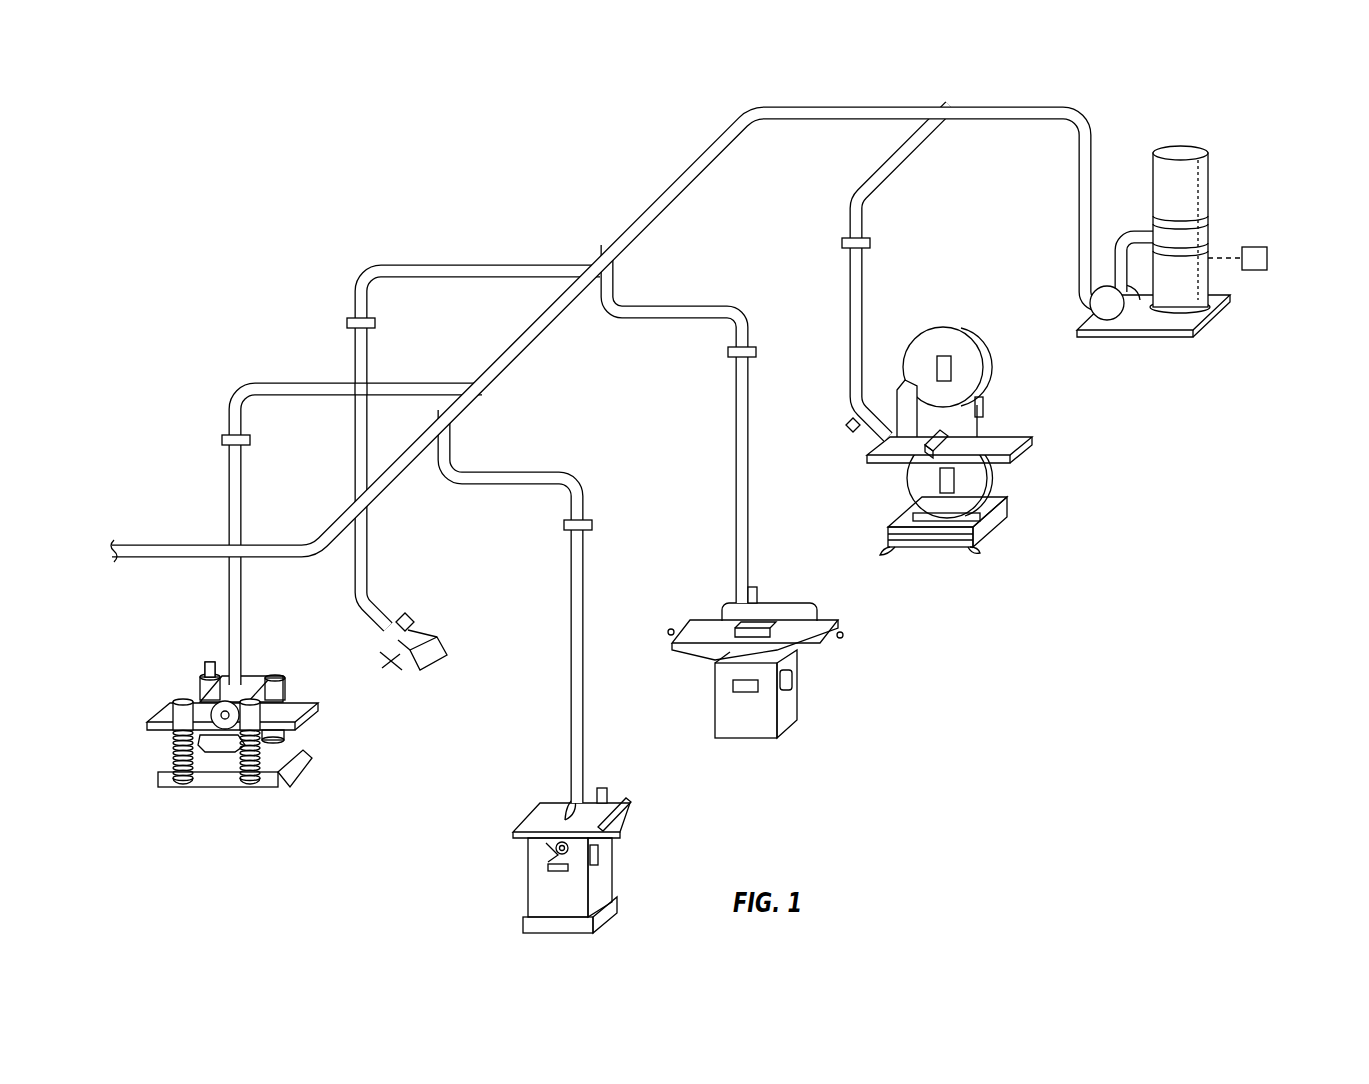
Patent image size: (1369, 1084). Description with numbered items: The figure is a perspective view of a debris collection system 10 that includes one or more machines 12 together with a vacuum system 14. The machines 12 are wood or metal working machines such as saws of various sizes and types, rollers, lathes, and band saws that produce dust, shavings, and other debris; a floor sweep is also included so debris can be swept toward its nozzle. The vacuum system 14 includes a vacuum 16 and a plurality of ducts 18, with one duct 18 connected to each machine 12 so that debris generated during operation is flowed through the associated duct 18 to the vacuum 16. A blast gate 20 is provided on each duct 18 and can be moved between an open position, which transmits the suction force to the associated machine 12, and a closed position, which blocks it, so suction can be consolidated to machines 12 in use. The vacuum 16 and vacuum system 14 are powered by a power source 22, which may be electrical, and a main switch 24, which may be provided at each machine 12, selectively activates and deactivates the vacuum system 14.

The debris collection system 10 is at (333, 222).
The machine 12 is at (312, 772).
The vacuum system 14 is at (1113, 100).
The vacuum 16 is at (1218, 228).
The duct 18 is at (440, 264).
The blast gate 20 is at (347, 323).
The power source 22 is at (1273, 247).
The main switch 24 is at (196, 650).